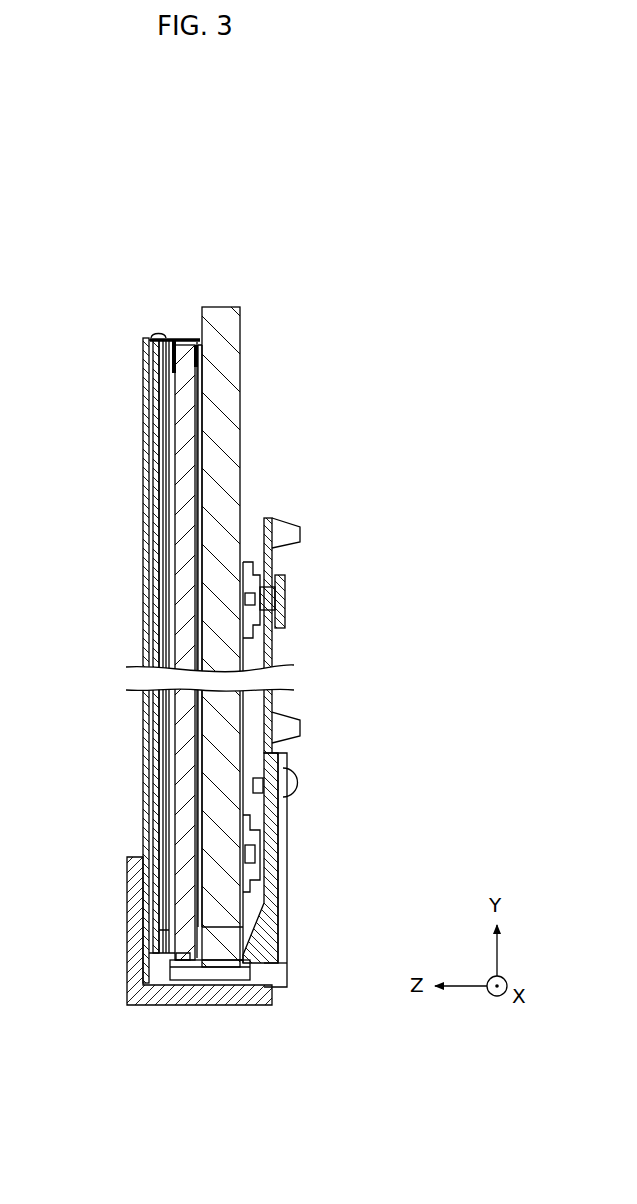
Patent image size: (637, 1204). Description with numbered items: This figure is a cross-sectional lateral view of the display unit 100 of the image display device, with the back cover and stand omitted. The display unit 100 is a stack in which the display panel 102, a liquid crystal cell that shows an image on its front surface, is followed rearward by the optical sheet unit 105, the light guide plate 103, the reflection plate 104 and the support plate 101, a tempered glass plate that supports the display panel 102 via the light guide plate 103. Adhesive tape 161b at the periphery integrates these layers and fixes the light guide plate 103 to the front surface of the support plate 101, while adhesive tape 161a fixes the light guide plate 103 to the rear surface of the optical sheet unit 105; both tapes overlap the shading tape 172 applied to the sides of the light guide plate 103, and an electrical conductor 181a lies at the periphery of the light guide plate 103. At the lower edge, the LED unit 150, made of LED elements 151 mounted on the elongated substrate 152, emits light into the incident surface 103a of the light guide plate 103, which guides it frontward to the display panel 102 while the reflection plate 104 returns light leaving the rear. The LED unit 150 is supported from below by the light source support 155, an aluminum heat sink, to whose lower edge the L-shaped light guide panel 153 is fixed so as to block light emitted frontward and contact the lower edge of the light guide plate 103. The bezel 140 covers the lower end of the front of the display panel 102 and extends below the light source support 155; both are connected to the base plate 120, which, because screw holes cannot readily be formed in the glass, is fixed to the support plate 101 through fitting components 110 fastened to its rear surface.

The display unit 100 is at (115, 250).
The support plate 101 is at (228, 343).
The display panel 102 is at (150, 405).
The light guide plate 103 is at (182, 592).
The incident surface 103a is at (217, 980).
The reflection plate 104 is at (201, 385).
The optical sheet unit 105 is at (157, 334).
The fitting component 110 is at (260, 568).
The base plate 120 is at (294, 807).
The bezel 140 is at (142, 1005).
The LED unit 150 is at (63, 932).
The LED element 151 is at (172, 963).
The substrate 152 is at (170, 968).
The light guide panel 153 is at (198, 983).
The light source support 155 is at (282, 982).
The adhesive tape 161a is at (156, 340).
The adhesive tape 161b is at (197, 340).
The shading tape 172 is at (200, 356).
The electrical conductor 181a is at (168, 338).